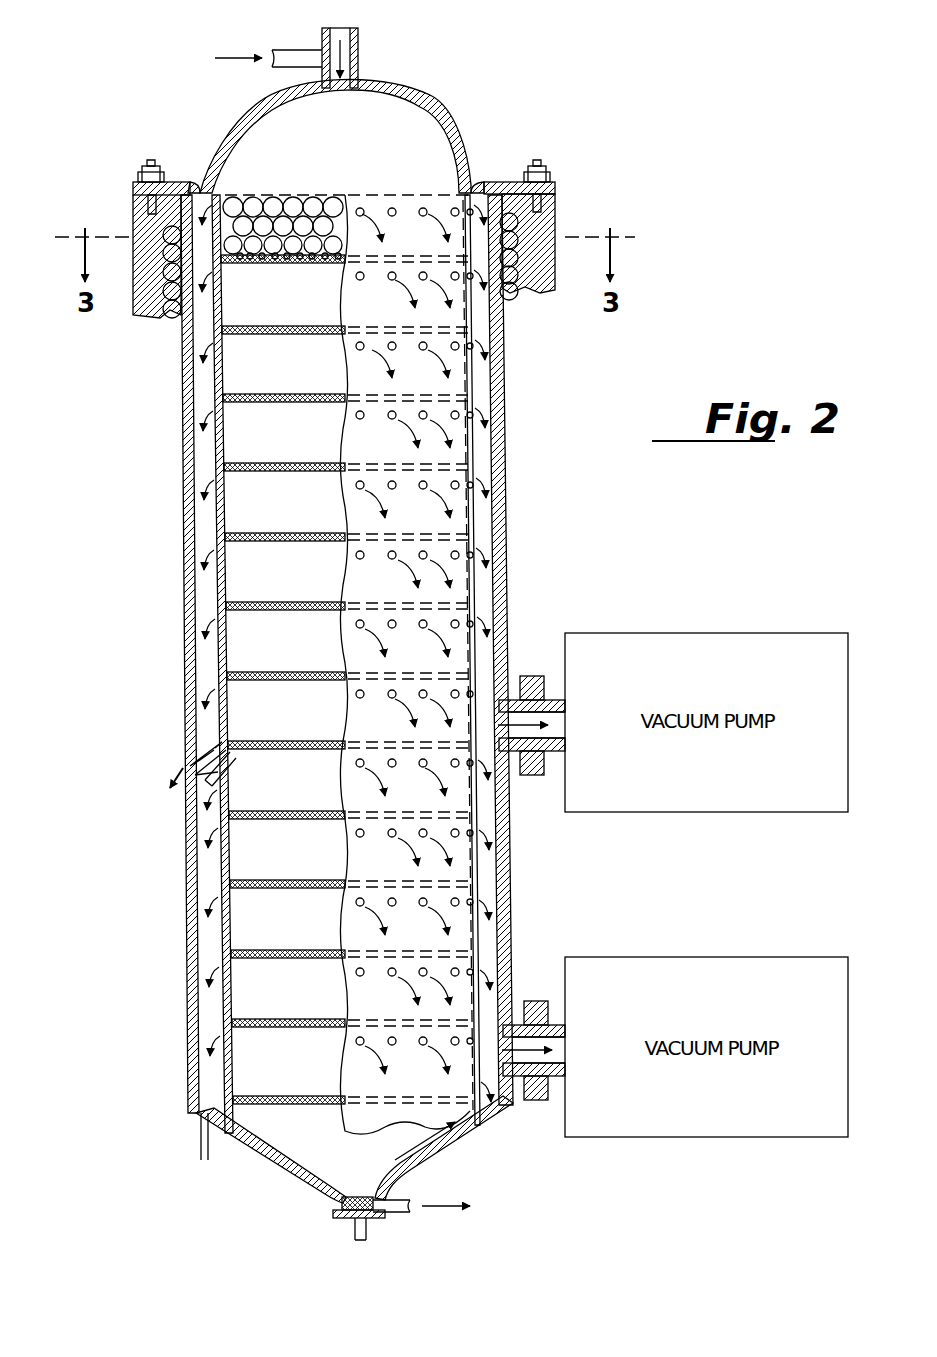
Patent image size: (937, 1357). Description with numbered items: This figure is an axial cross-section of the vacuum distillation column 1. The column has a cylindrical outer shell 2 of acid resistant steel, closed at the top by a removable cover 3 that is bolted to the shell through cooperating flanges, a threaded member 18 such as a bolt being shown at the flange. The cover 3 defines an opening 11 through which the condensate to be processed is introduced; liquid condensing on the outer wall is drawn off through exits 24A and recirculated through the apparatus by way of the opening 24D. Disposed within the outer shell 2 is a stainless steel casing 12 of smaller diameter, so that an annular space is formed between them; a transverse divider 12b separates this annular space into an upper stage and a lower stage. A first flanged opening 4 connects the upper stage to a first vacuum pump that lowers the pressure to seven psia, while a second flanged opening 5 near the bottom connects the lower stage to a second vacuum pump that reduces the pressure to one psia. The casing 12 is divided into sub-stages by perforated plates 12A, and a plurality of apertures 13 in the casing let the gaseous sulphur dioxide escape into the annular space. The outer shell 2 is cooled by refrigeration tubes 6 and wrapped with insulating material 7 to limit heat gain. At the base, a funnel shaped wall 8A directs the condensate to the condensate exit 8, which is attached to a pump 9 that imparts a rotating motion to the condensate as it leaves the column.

The vacuum distillation column 1 is at (168, 497).
The outer shell 2 is at (187, 620).
The removable cover 3 is at (436, 112).
The first flanged opening 4 is at (512, 692).
The second flanged opening 5 is at (536, 1085).
The refrigeration tubes 6 is at (142, 222).
The insulating material 7 is at (160, 300).
The condensate exit 8 is at (355, 1166).
The funnel shaped wall 8A is at (340, 1214).
The pump 9 is at (348, 1220).
The opening 11 is at (356, 78).
The casing 12 is at (222, 436).
The perforated plates 12A is at (262, 270).
The transverse divider 12b is at (195, 785).
The apertures 13 is at (455, 346).
The threaded member 18 is at (535, 165).
The exits 24A is at (185, 752).
The opening 24D is at (300, 52).